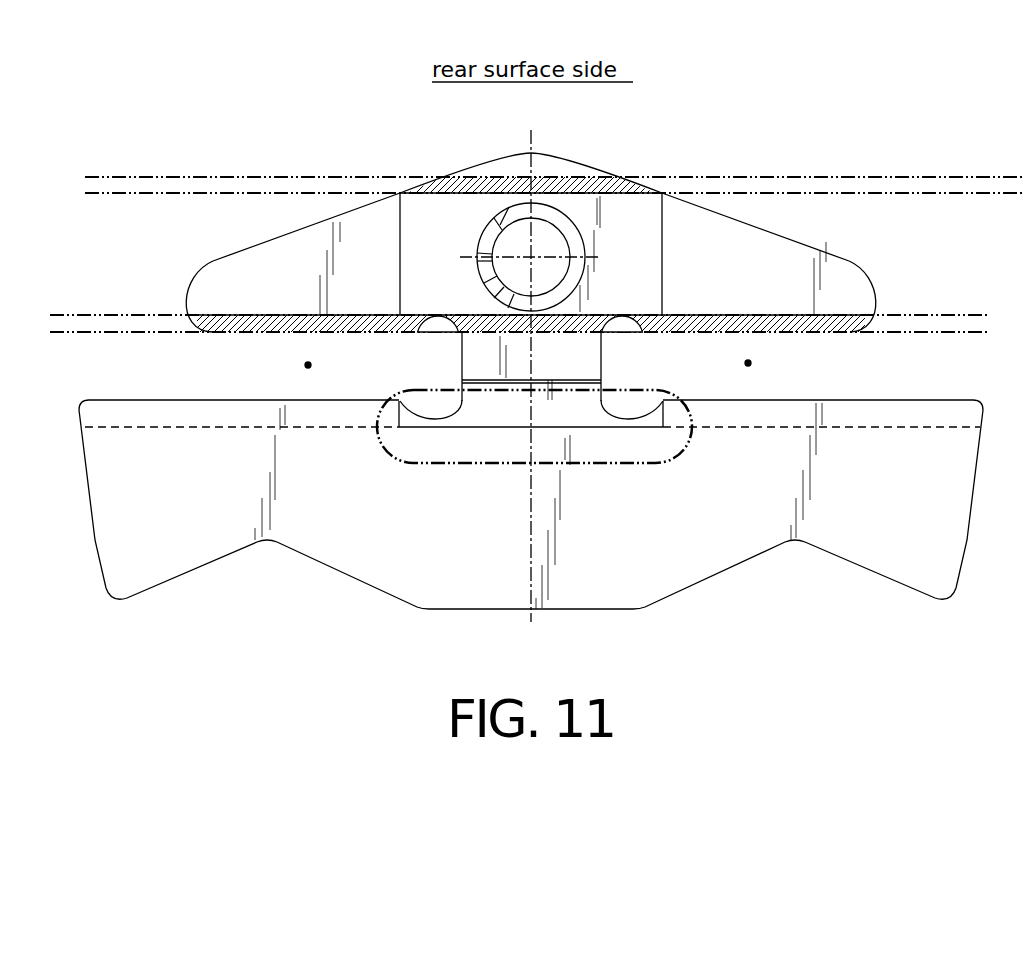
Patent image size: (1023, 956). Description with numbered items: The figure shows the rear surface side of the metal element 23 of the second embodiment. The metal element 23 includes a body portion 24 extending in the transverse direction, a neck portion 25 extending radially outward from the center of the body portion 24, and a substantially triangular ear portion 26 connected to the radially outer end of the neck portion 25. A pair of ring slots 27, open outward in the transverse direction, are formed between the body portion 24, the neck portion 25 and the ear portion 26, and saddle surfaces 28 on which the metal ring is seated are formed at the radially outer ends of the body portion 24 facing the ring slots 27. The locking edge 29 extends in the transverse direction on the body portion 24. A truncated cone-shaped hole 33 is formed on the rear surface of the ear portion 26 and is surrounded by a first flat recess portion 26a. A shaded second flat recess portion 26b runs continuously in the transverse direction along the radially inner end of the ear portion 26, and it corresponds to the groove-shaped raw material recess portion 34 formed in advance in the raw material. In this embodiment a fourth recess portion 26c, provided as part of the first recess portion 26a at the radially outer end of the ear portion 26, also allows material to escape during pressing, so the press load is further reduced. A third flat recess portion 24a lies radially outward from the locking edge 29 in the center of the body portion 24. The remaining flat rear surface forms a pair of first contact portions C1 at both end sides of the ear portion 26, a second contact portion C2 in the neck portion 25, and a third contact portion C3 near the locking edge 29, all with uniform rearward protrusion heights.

The metal element 23 is at (714, 150).
The body portion 24 is at (742, 566).
The third flat recess portion 24a is at (500, 415).
The neck portion 25 is at (606, 364).
The ear portion 26 is at (312, 224).
The first flat recess portion 26a is at (447, 208).
The second flat recess portion 26b is at (343, 320).
The fourth recess portion 26c is at (503, 178).
The ring slots 27 is at (307, 364).
The saddle surfaces 28 is at (264, 400).
The locking edge 29 is at (333, 428).
The truncated cone-shaped hole 33 is at (548, 238).
The raw material recess portion 34 is at (927, 187).
The first contact portions C1 is at (283, 263).
The second contact portion C2 is at (583, 352).
The third contact portion C3 is at (625, 463).